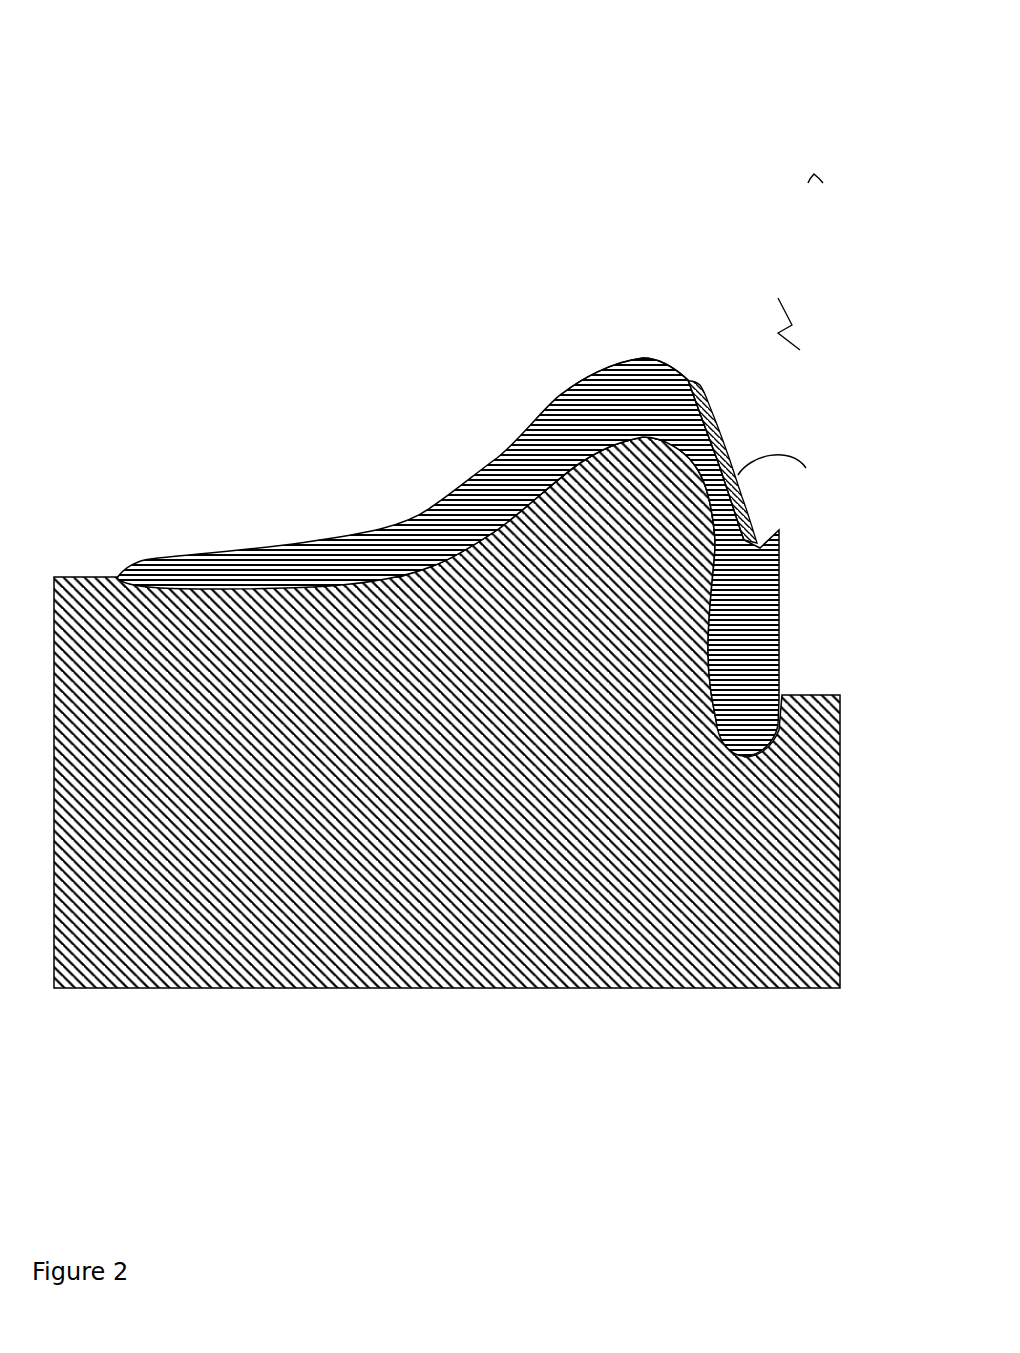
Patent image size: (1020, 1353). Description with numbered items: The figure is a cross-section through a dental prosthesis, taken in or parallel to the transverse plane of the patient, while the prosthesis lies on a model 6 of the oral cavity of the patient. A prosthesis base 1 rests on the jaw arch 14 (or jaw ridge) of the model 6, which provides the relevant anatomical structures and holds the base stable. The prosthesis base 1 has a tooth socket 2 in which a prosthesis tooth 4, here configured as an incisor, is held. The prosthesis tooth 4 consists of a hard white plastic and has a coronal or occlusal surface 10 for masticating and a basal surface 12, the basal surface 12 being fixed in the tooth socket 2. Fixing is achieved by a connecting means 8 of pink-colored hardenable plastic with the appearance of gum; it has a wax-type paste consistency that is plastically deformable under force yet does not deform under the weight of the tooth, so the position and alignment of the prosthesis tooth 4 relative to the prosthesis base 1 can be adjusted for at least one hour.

The prosthesis base 1 is at (402, 547).
The tooth socket 2 is at (807, 468).
The prosthesis tooth 4 is at (767, 283).
The model of the oral cavity 6 is at (460, 732).
The connecting means 8 is at (648, 367).
The occlusal surface 10 is at (813, 172).
The basal surface 12 is at (688, 380).
The jaw arch 14 is at (640, 512).